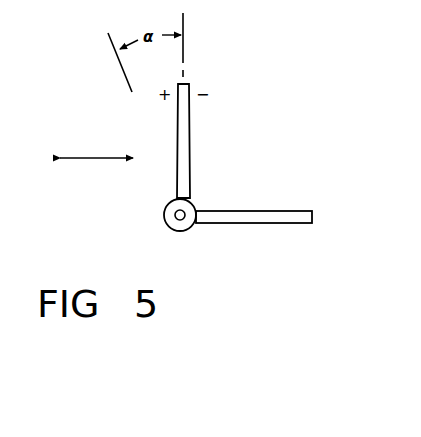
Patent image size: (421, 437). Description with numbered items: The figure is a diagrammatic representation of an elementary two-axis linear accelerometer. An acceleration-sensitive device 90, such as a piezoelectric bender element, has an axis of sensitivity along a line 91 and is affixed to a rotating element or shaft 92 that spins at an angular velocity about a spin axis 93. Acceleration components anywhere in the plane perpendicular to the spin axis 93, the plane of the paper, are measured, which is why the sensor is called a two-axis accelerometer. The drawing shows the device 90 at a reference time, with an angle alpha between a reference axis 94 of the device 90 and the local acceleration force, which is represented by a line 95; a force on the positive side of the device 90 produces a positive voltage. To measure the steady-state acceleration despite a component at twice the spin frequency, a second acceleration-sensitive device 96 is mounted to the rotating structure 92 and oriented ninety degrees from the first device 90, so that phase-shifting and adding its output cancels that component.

The acceleration-sensitive device 90 is at (190, 137).
The line 91 is at (92, 157).
The rotating element or shaft 92 is at (165, 208).
The spin axis 93 is at (184, 208).
The reference axis 94 is at (184, 27).
The line 95 is at (123, 83).
The second acceleration-sensitive device 96 is at (277, 212).